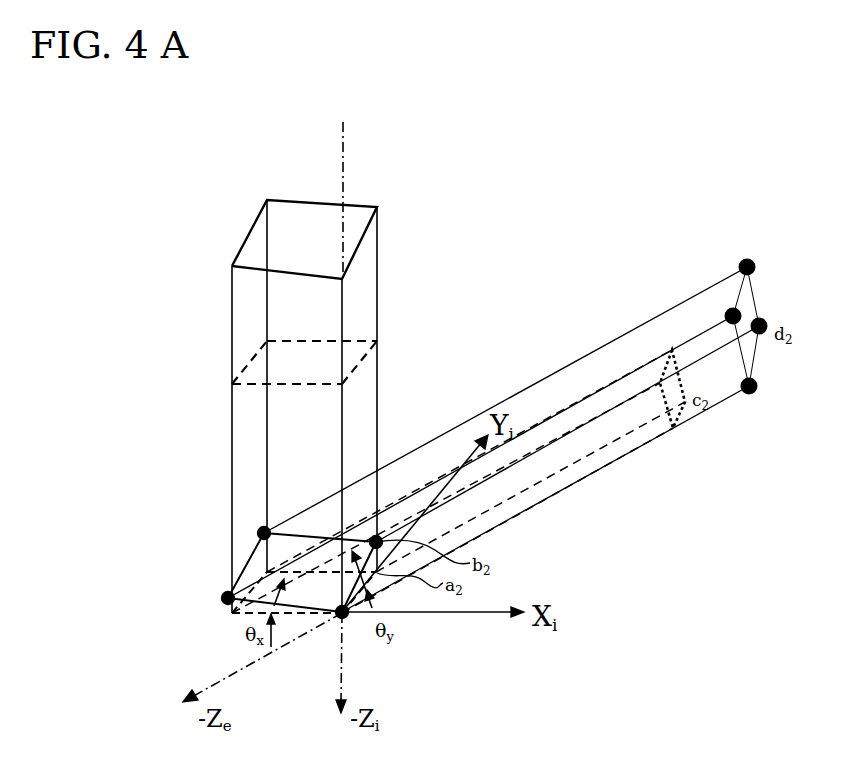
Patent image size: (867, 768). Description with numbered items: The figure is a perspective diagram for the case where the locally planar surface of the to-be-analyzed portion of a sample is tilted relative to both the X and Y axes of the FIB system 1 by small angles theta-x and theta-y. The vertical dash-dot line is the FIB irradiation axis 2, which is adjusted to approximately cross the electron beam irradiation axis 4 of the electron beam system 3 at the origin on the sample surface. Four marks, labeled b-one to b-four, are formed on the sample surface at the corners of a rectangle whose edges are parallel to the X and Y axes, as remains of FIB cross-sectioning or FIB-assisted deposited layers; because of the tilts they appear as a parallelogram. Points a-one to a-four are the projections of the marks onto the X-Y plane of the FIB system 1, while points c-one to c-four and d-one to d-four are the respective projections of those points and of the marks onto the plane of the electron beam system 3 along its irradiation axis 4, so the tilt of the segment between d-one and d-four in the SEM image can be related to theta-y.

The FIB irradiation axis 2 is at (343, 168).
The FIB system 1 is at (548, 522).
The electron beam system 3 is at (182, 542).
The electron beam irradiation axis 4 is at (469, 471).